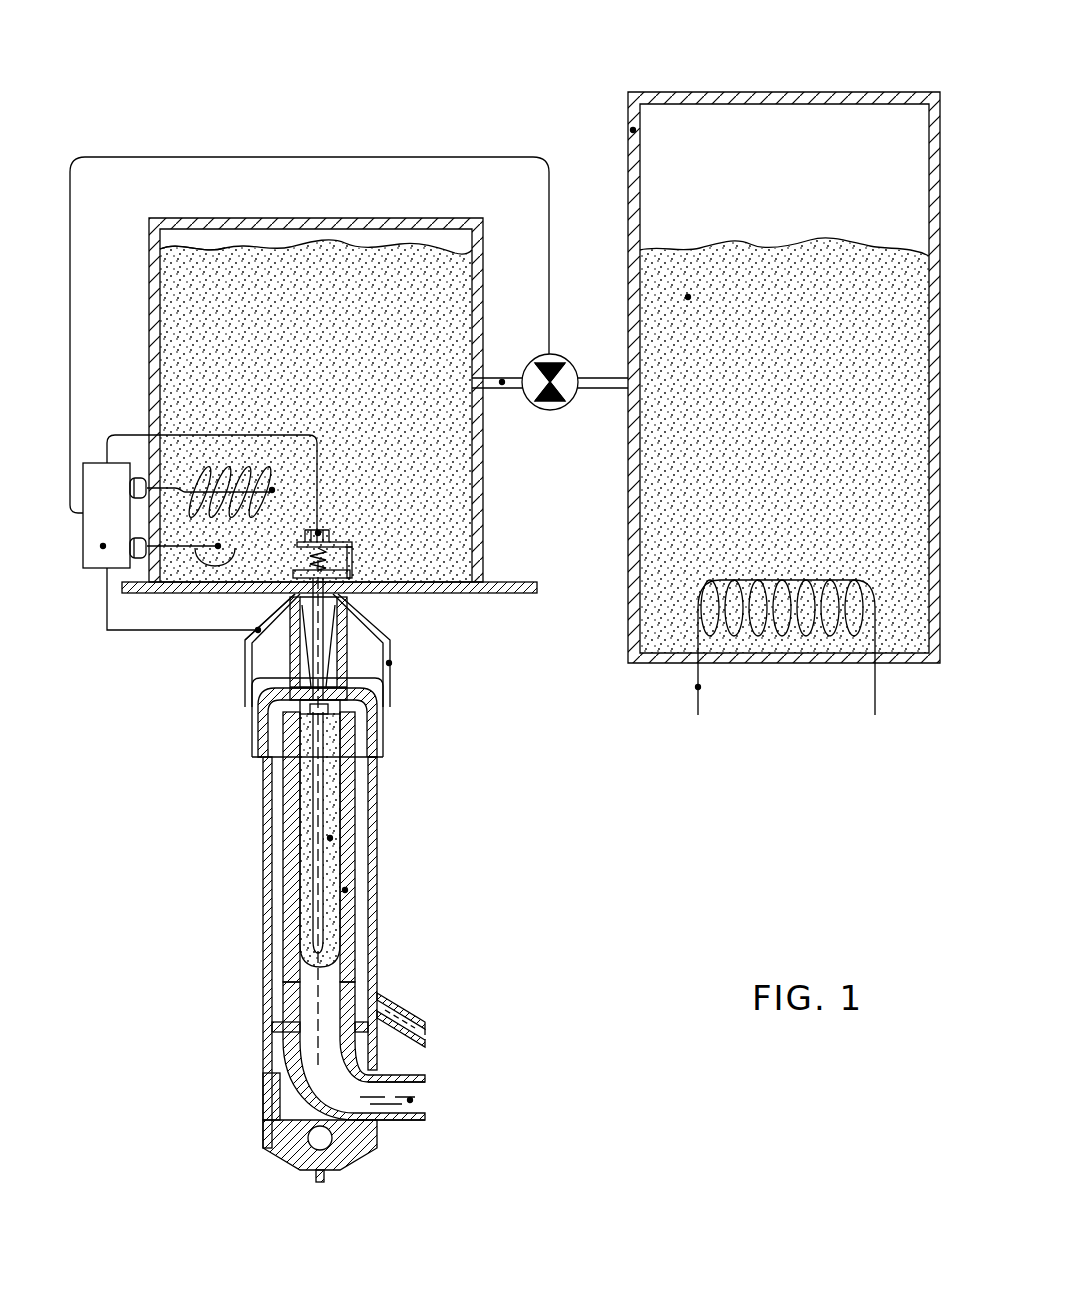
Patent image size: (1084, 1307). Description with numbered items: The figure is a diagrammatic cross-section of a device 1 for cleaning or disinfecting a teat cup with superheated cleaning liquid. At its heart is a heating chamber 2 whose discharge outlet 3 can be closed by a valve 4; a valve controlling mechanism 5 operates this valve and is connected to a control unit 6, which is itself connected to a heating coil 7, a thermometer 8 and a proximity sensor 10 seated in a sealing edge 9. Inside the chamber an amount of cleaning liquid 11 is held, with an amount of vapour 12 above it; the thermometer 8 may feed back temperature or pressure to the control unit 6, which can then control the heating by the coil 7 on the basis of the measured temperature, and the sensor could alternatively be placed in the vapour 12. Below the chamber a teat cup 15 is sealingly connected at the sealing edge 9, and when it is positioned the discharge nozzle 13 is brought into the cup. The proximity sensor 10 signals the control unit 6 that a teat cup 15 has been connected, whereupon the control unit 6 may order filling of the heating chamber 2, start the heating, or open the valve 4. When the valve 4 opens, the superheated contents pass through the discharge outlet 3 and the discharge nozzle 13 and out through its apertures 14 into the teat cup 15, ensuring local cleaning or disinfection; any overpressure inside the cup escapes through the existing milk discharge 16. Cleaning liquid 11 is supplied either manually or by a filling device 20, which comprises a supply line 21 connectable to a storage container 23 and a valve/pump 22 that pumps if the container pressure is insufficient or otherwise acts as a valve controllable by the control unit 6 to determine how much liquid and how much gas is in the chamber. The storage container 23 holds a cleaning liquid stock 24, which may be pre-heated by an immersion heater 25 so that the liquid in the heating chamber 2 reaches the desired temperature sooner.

The device 1 is at (165, 690).
The heating chamber 2 is at (336, 222).
The discharge outlet 3 is at (345, 598).
The valve 4 is at (412, 594).
The valve controlling mechanism 5 is at (318, 533).
The control unit 6 is at (103, 546).
The heating coil 7 is at (272, 490).
The thermometer 8 is at (218, 546).
The sealing edge 9 is at (389, 663).
The proximity sensor 10 is at (237, 640).
The cleaning liquid 11 is at (182, 316).
The vapour 12 is at (181, 245).
The discharge nozzle 13 is at (330, 838).
The apertures 14 is at (345, 890).
The teat cup 15 is at (265, 952).
The milk discharge 16 is at (410, 1100).
The filling device 20 is at (732, 444).
The supply line 21 is at (502, 382).
The valve/pump 22 is at (572, 400).
The storage container 23 is at (633, 130).
The cleaning liquid stock 24 is at (688, 297).
The immersion heater 25 is at (698, 687).